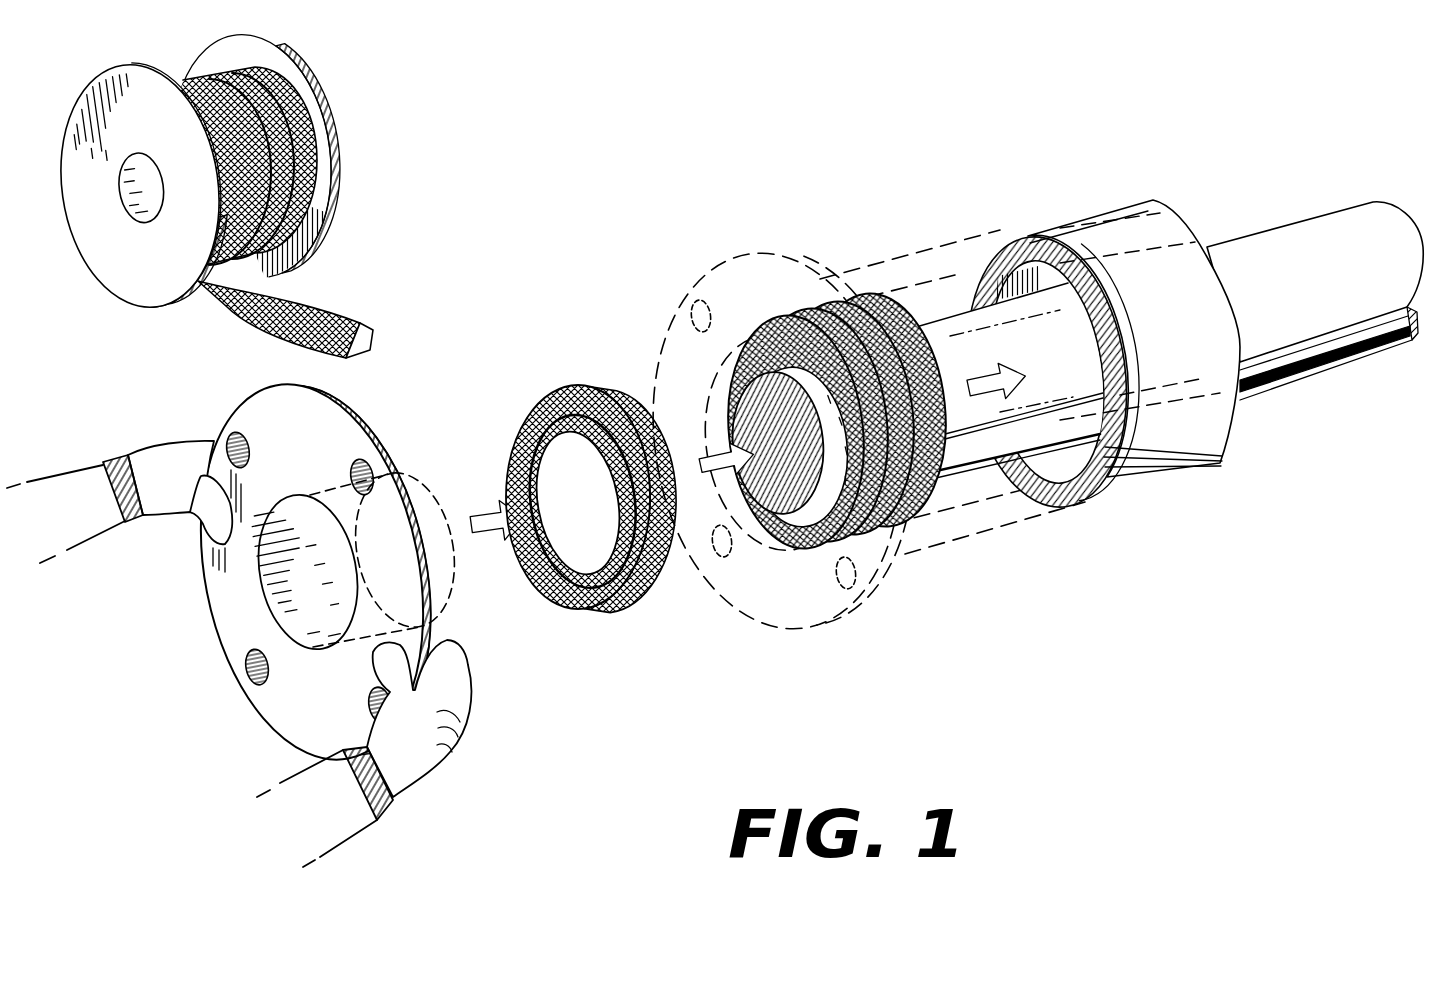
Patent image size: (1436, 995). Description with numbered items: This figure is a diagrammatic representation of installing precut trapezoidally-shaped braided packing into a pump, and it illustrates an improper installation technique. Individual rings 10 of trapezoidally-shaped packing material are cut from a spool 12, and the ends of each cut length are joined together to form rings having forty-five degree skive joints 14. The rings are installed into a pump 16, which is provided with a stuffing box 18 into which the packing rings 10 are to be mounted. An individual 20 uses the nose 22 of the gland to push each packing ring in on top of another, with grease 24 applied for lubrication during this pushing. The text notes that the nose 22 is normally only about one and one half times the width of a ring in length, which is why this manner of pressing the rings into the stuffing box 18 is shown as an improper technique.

The packing rings 10 is at (938, 505).
The spool 12 is at (317, 148).
The skive joints 14 is at (630, 413).
The pump 16 is at (1008, 635).
The stuffing box 18 is at (947, 307).
The individual 20 is at (67, 437).
The nose of the gland 22 is at (430, 473).
The grease 24 is at (560, 517).